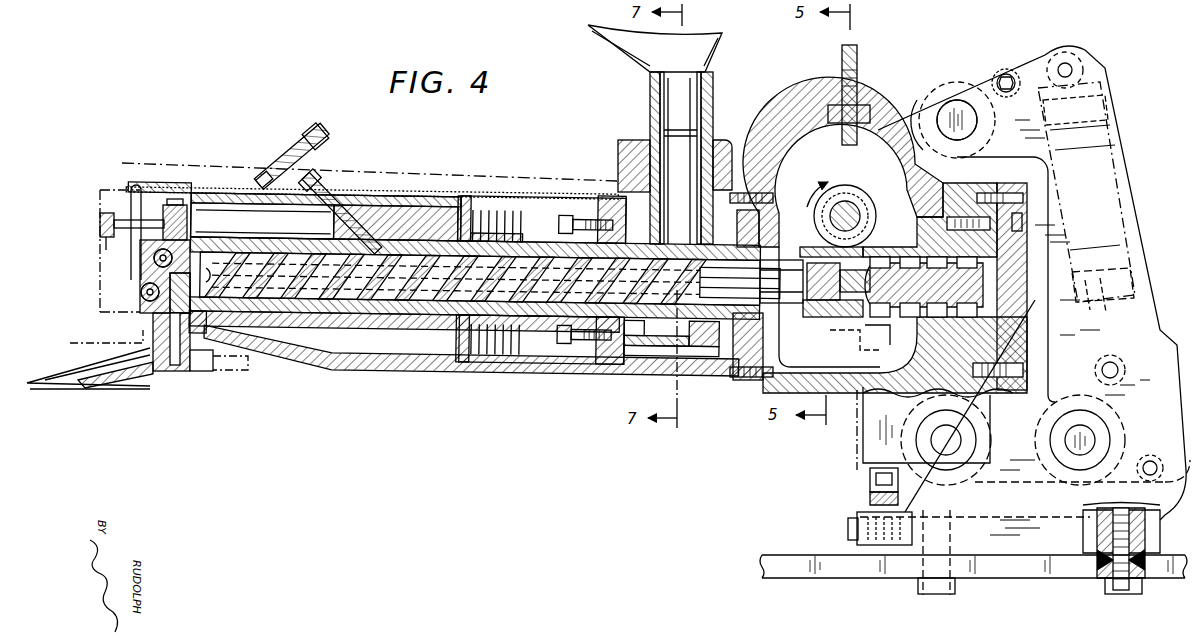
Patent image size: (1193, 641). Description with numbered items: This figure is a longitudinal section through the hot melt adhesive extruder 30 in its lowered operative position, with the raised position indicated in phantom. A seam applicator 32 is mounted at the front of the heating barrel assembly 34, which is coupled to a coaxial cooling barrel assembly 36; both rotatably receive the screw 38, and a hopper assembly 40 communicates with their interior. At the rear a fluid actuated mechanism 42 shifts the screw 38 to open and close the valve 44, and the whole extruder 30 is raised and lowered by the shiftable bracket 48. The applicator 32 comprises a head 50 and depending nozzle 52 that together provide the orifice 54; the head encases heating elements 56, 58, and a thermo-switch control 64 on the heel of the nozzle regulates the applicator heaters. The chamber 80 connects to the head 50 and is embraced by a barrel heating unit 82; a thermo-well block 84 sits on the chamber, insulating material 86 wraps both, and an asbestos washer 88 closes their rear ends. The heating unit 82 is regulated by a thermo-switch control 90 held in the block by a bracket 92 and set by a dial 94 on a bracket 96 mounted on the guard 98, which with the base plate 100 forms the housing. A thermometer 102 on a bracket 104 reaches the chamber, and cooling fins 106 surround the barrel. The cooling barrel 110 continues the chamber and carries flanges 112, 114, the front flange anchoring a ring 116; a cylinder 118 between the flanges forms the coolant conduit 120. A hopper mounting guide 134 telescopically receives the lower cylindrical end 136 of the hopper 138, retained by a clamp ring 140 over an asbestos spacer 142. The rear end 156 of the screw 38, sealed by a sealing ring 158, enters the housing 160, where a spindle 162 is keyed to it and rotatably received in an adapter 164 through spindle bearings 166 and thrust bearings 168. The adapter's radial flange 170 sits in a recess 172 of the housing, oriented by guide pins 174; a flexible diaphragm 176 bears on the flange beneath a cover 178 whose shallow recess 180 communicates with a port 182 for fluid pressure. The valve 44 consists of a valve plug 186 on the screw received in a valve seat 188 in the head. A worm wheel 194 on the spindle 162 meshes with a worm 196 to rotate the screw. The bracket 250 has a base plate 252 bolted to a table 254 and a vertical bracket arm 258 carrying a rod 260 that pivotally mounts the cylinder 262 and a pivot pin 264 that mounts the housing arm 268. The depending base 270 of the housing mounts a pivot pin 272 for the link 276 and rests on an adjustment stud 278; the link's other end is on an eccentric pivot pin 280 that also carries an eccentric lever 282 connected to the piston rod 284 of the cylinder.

The hot melt adhesive extruder 30 is at (578, 89).
The seam applicator 32 is at (118, 341).
The heating barrel assembly 34 is at (332, 340).
The cooling barrel assembly 36 is at (668, 342).
The screw 38 is at (531, 306).
The hopper assembly 40 is at (730, 50).
The fluid actuated mechanism 42 is at (890, 228).
The valve 44 is at (234, 338).
The shiftable bracket 48 is at (1157, 240).
The head 50 is at (140, 273).
The nozzle 52 is at (128, 388).
The orifice 54 is at (170, 372).
The heating element 56 is at (140, 257).
The heating element 58 is at (140, 292).
The thermo-switch control 64 is at (206, 371).
The barrel or chamber 80 is at (298, 318).
The barrel heating unit 82 is at (403, 316).
The thermo-well block 84 is at (373, 210).
The insulating material 86 is at (415, 198).
The asbestos washer 88 is at (455, 342).
The thermo-switch control 90 is at (238, 198).
The bracket 92 is at (170, 218).
The dial 94 is at (100, 220).
The bracket 96 is at (128, 200).
The guard 98 is at (506, 188).
The base plate 100 is at (360, 368).
The thermometer 102 is at (285, 150).
The bracket 104 is at (336, 190).
The cooling fins 106 is at (522, 224).
The barrel 110 is at (655, 317).
The front flange 112 is at (603, 352).
The flange 114 is at (738, 378).
The ring 116 is at (568, 340).
The cylinder 118 is at (683, 342).
The conduit 120 is at (638, 334).
The hopper mounting guide 134 is at (661, 150).
The lower cylindrical end 136 is at (713, 92).
The hopper 138 is at (598, 32).
The clamp ring 140 is at (732, 152).
The asbestos spacer 142 is at (618, 165).
The rear end 156 is at (800, 288).
The sealing ring 158 is at (790, 315).
The housing 160 is at (835, 128).
The spindle 162 is at (860, 325).
The adapter 164 is at (942, 196).
The spindle bearings 166 is at (893, 322).
The thrust bearings 168 is at (1000, 280).
The radial flange 170 is at (1003, 192).
The recess 172 is at (938, 401).
The guide pins 174 is at (973, 200).
The flexible diaphragm 176 is at (1012, 232).
The cover 178 is at (1005, 220).
The recess 180 is at (1012, 330).
The port 182 is at (1103, 290).
The valve plug 186 is at (218, 268).
The valve seat 188 is at (204, 275).
The worm wheel 194 is at (813, 235).
The worm 196 is at (852, 200).
The bracket 250 is at (1160, 535).
The base plate 252 is at (1040, 560).
The support platform or table 254 is at (875, 578).
The vertical bracket arm 258 is at (1158, 300).
The rod 260 is at (1063, 62).
The cylinder 262 is at (1122, 133).
The pivot pin 264 is at (952, 105).
The arm 268 is at (912, 115).
The base 270 is at (863, 440).
The pivot pin 272 is at (962, 442).
The link 276 is at (1022, 484).
The adjustment stud 278 is at (870, 497).
The eccentric pivot pin 280 is at (1080, 460).
The eccentric lever 282 is at (1097, 367).
The rod 284 is at (1162, 326).